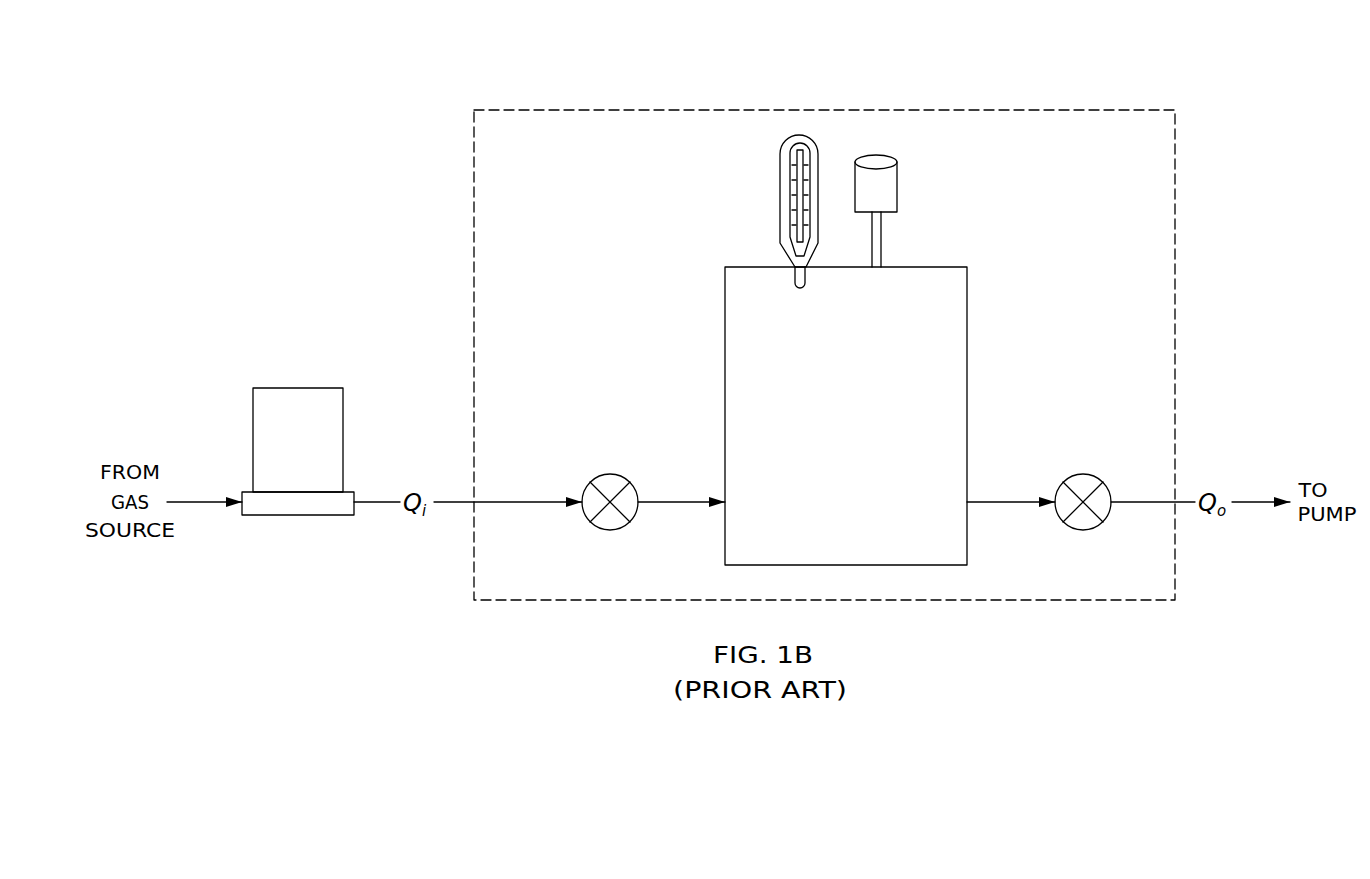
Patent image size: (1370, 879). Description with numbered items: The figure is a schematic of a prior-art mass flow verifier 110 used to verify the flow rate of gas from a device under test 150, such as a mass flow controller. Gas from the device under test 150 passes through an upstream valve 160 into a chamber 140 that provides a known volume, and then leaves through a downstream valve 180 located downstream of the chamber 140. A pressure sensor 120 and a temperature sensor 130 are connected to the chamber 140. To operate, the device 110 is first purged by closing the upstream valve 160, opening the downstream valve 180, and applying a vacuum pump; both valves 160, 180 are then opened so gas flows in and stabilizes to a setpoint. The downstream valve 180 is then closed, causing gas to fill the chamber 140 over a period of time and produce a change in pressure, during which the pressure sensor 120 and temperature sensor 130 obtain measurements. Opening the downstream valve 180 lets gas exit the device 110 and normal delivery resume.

The mass flow verifier 110 is at (1092, 110).
The pressure sensor 120 is at (897, 186).
The temperature sensor 130 is at (780, 200).
The chamber 140 is at (863, 423).
The device under test 150 is at (292, 388).
The upstream valve 160 is at (598, 476).
The downstream valve 180 is at (1068, 476).